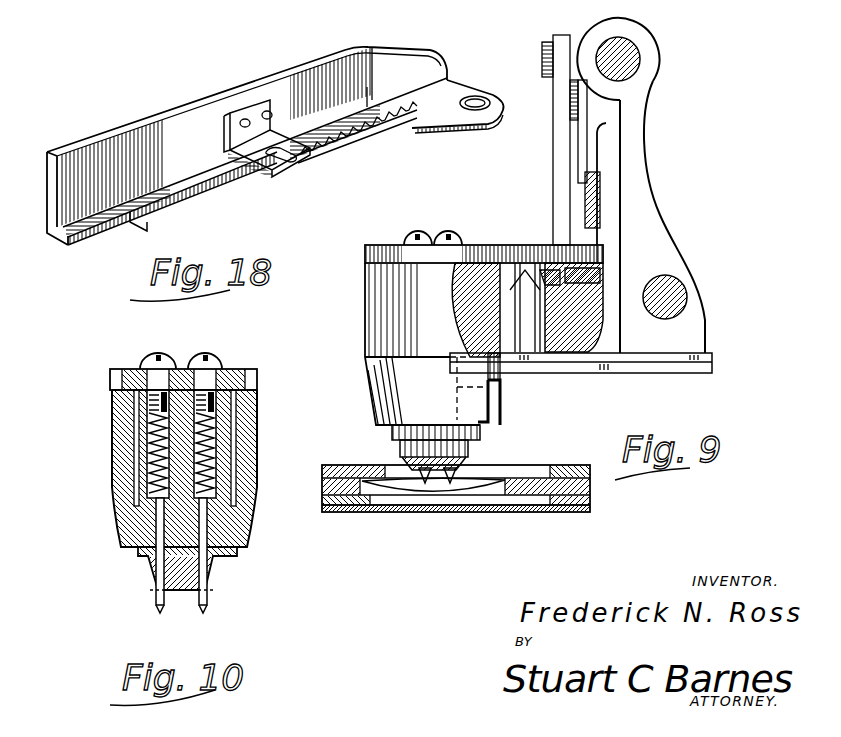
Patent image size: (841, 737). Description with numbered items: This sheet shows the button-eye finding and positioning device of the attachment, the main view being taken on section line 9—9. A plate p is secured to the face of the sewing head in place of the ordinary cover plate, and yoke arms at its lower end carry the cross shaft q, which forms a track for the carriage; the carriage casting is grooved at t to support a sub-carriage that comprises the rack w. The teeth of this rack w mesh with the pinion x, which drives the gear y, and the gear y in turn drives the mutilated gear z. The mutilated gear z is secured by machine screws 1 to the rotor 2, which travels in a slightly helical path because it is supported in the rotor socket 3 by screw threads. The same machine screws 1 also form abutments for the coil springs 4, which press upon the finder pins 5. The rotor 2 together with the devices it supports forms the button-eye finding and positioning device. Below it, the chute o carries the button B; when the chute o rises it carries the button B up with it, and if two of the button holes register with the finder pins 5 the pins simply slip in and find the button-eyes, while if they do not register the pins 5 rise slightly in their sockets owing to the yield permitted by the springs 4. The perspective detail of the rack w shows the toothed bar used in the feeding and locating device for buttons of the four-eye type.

In FIG. 18, the rack w is at (330, 82).
In FIG. 9, the rack w is at (633, 248).
In FIG. 9, the plate p is at (652, 40).
In FIG. 9, the cross shaft q is at (633, 63).
In FIG. 9, the supporting arm 9 is at (644, 190).
In FIG. 9, the groove t is at (607, 275).
In FIG. 9, the mutilated gear z is at (395, 243).
In FIG. 10, the mutilated gear z is at (232, 369).
In FIG. 9, the screws 1 is at (440, 243).
In FIG. 10, the screws 1 is at (210, 352).
In FIG. 9, the pinion x is at (465, 243).
In FIG. 9, the gear y is at (500, 243).
In FIG. 9, the rotor socket 3 is at (378, 303).
In FIG. 10, the rotor socket 3 is at (118, 456).
In FIG. 9, the chute o is at (333, 514).
In FIG. 9, the button B is at (400, 508).
In FIG. 9, the finder pins 5 is at (435, 498).
In FIG. 10, the finder pins 5 is at (152, 560).
In FIG. 10, the coil springs 4 is at (150, 418).
In FIG. 10, the rotor 2 is at (150, 520).